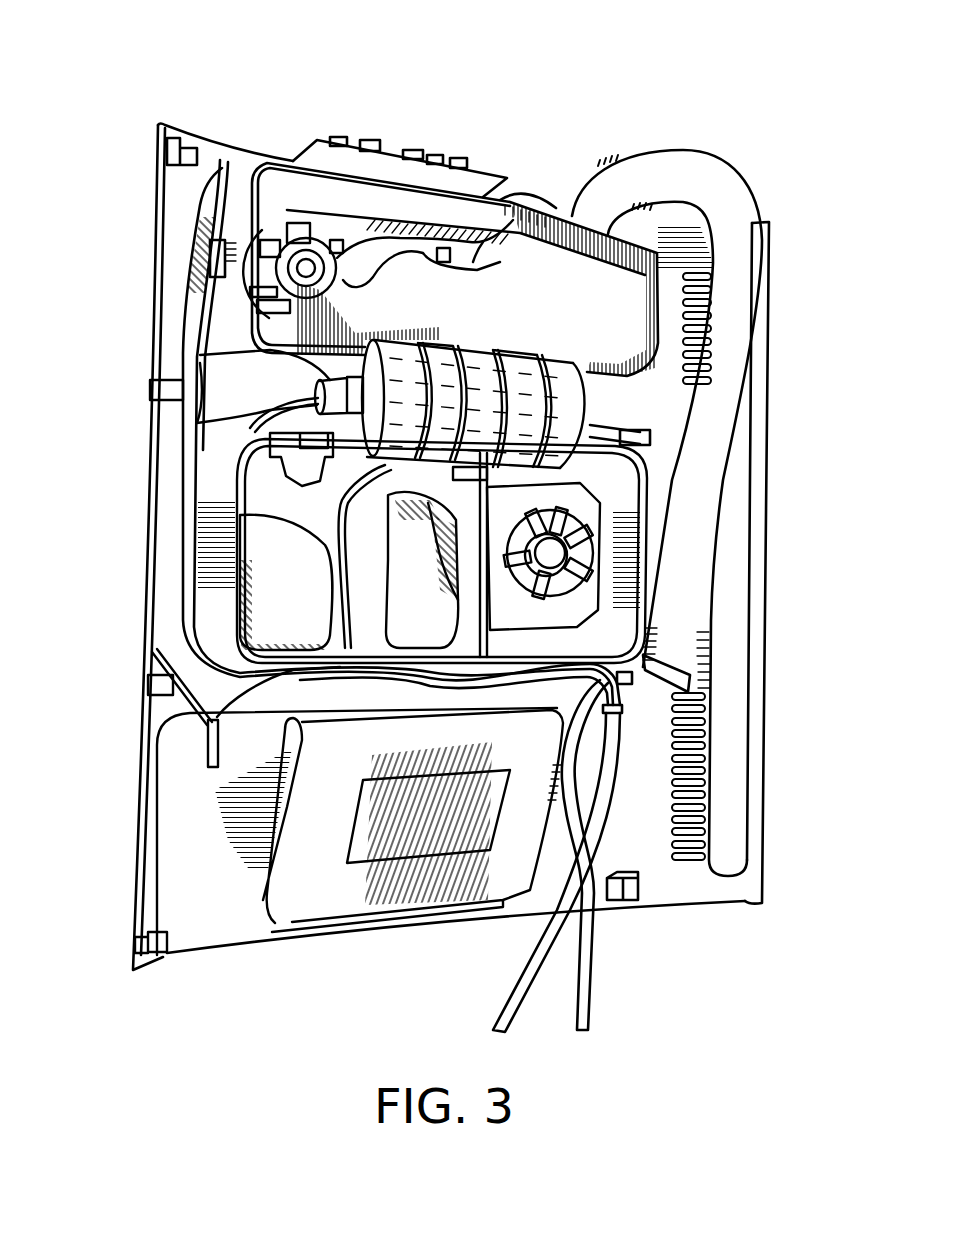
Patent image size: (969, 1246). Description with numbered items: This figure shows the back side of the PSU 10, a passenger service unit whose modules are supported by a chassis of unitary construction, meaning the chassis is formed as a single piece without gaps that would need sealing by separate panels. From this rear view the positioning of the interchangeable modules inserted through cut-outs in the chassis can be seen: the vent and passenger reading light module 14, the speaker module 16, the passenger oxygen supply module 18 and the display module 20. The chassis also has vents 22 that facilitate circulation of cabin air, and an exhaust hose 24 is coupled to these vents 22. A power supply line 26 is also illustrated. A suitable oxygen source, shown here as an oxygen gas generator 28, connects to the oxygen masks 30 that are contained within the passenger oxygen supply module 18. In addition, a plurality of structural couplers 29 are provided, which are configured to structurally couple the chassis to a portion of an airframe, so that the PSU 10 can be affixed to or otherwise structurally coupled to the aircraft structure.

The PSU 10 is at (667, 118).
The vent and passenger reading light module 14 is at (283, 207).
The speaker module 16 is at (607, 583).
The passenger oxygen supply module 18 is at (270, 492).
The display module 20 is at (180, 840).
The vents 22 is at (700, 775).
The exhaust hose 24 is at (733, 200).
The power supply line 26 is at (587, 975).
The oxygen gas generator 28 is at (393, 413).
The structural couplers 29 is at (157, 940).
The oxygen masks 30 is at (262, 628).